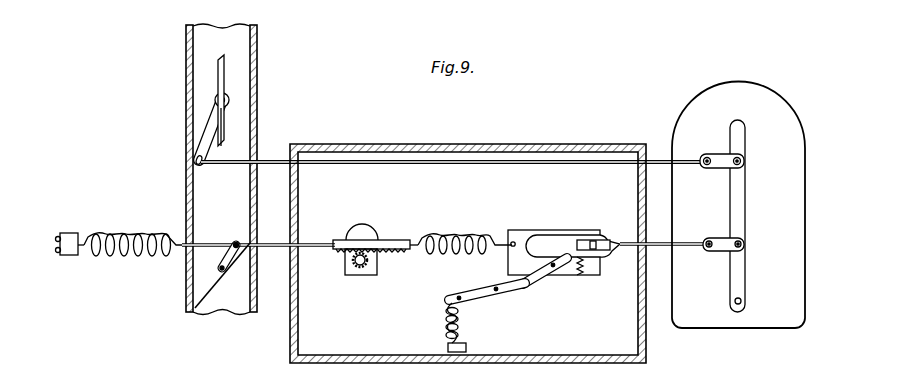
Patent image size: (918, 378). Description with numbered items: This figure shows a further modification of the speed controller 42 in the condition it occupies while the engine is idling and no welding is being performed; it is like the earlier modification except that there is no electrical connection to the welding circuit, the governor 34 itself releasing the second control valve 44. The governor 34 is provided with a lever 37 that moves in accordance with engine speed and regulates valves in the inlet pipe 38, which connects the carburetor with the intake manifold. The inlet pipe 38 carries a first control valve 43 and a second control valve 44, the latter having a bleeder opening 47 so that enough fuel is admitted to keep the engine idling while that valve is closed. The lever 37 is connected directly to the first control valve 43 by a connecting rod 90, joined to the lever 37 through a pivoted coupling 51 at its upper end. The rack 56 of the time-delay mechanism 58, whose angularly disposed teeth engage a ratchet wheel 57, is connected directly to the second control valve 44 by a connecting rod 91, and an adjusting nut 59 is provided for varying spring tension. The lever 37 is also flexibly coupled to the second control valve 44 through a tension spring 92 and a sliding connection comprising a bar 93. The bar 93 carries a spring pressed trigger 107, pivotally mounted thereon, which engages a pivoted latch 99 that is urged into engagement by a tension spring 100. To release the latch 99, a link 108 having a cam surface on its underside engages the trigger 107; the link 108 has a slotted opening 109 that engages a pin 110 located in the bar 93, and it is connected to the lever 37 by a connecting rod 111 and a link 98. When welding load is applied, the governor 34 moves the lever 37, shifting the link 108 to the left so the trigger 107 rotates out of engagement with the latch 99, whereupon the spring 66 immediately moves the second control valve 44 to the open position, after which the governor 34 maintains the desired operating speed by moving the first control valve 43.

The governor 34 is at (789, 110).
The lever 37 is at (745, 135).
The inlet pipe 38 is at (257, 70).
The speed controller 42 is at (446, 131).
The first control valve 43 is at (224, 87).
The second control valve 44 is at (228, 273).
The bleeder opening 47 is at (232, 272).
The link 51 is at (716, 169).
The rack 56 is at (339, 238).
The ratchet wheel 57 is at (370, 268).
The time-delay mechanism 58 is at (371, 228).
The adjusting nut 59 is at (62, 234).
The spring 66 is at (128, 235).
The connecting rod 90 is at (500, 145).
The connecting rod 91 is at (270, 240).
The tension spring 92 is at (464, 236).
The bar 93 is at (517, 230).
The link 98 is at (720, 252).
The latch 99 is at (488, 296).
The tension spring 100 is at (466, 337).
The trigger 107 is at (547, 281).
The link 108 is at (564, 235).
The slotted opening 109 is at (606, 240).
The pin 110 is at (594, 241).
The connecting rod 111 is at (670, 238).